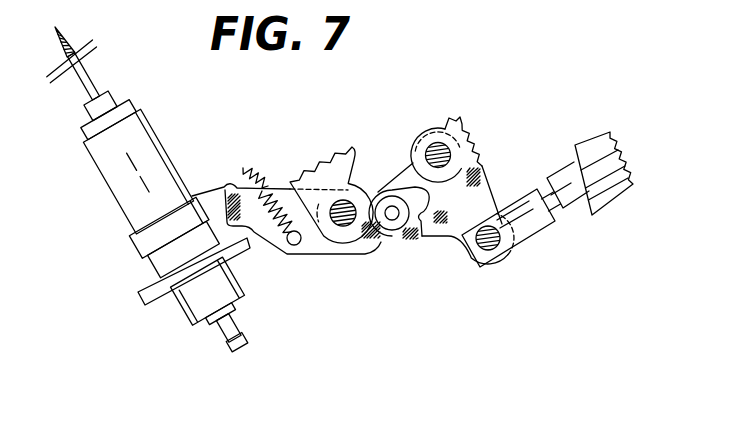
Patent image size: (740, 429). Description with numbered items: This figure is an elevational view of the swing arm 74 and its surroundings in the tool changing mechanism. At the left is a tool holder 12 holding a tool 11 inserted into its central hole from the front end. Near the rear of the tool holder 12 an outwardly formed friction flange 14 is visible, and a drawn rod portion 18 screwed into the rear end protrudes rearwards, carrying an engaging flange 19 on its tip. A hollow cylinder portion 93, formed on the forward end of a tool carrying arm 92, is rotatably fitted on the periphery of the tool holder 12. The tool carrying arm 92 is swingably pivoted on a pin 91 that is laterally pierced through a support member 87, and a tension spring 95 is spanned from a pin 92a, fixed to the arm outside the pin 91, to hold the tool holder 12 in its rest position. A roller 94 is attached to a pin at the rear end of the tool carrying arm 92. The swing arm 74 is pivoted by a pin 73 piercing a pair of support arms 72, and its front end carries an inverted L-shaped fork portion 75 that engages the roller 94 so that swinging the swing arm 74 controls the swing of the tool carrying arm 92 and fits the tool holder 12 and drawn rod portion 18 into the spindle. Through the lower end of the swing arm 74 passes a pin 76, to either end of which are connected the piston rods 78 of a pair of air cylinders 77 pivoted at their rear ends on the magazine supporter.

The tool 11 is at (86, 66).
The tool holder 12 is at (104, 200).
The friction flange 14 is at (157, 301).
The drawn rod portion 18 is at (243, 333).
The engaging flange 19 is at (228, 357).
The support arms 72 is at (450, 116).
The pin 73 is at (447, 150).
The swing arm 74 is at (483, 168).
The fork portion 75 is at (420, 222).
The pin 76 is at (490, 249).
The air cylinders 77 is at (597, 143).
The piston rods 78 is at (558, 212).
The support member 87 is at (310, 208).
The pin 91 is at (347, 223).
The tool carrying arm 92 is at (228, 188).
The pin 92a is at (292, 245).
The hollow cylinder portion 93 is at (191, 195).
The roller 94 is at (391, 206).
The tension spring 95 is at (264, 188).